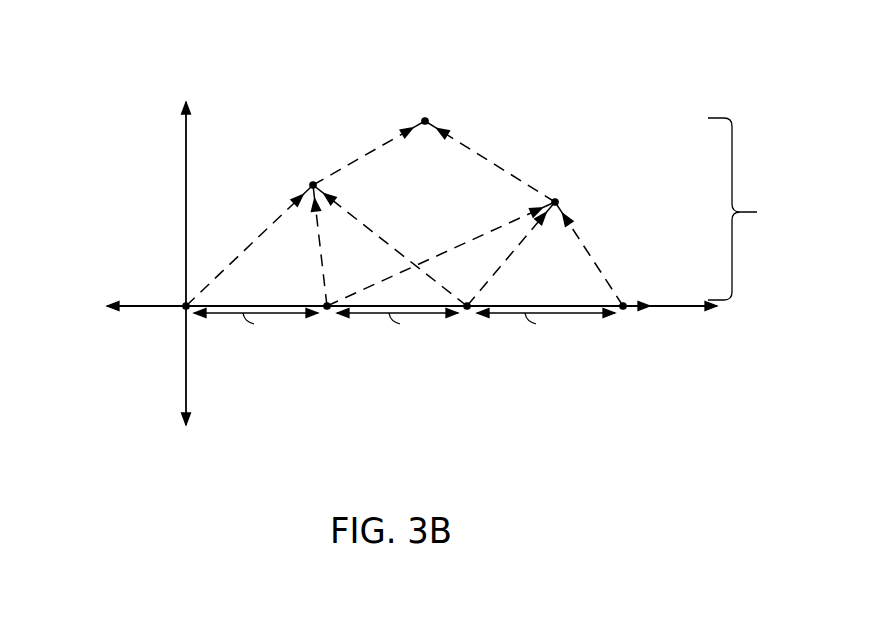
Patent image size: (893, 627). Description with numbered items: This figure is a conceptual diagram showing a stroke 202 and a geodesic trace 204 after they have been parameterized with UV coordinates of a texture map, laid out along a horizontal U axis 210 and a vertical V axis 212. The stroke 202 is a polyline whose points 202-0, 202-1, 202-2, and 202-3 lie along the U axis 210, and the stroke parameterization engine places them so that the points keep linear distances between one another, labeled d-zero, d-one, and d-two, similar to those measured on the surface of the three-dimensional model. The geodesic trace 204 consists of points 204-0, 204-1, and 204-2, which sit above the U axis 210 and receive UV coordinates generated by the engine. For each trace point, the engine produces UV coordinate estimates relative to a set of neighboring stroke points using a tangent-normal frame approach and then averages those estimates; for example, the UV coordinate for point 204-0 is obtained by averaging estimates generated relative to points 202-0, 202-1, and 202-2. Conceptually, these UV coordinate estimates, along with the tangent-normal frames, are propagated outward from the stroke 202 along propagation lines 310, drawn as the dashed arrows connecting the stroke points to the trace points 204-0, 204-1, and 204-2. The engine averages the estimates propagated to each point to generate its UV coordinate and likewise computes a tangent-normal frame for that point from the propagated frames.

The stroke 202 is at (614, 320).
The point 202-0 is at (186, 306).
The point 202-1 is at (327, 306).
The point 202-2 is at (467, 306).
The point 202-3 is at (623, 306).
The geodesic trace 204 is at (755, 209).
The point 204-0 is at (313, 185).
The point 204-1 is at (555, 202).
The point 204-2 is at (425, 121).
The U axis 210 is at (700, 313).
The V axis 212 is at (186, 382).
The propagation lines 310 is at (250, 236).